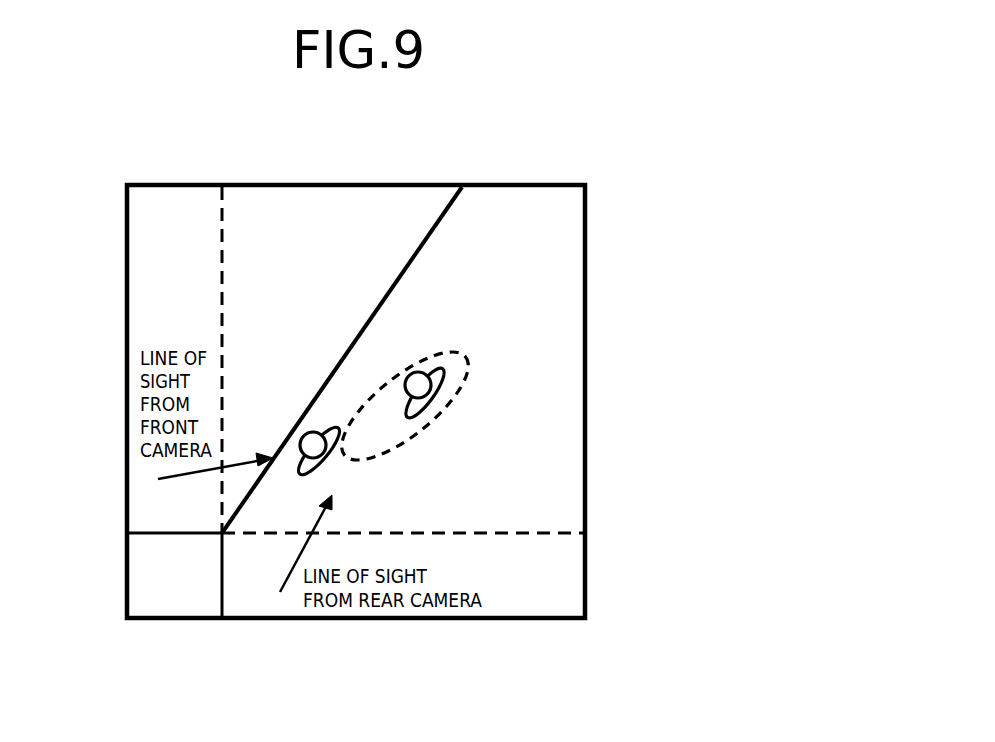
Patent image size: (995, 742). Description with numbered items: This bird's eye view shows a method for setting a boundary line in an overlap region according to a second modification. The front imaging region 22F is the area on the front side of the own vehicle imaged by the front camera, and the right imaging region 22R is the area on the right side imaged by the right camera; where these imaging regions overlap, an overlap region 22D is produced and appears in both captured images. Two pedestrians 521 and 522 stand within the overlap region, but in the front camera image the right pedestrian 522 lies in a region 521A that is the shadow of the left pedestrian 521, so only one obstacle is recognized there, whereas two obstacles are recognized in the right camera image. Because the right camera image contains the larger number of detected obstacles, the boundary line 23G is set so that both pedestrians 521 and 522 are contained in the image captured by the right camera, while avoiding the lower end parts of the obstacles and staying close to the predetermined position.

The overlap region 22D is at (548, 270).
The front imaging region 22F is at (173, 298).
The right imaging region 22R is at (497, 587).
The boundary line 23G is at (432, 232).
The left pedestrian 521 is at (330, 457).
The right pedestrian 522 is at (416, 368).
The region which is the shadow of the left pedestrian 521A is at (425, 420).